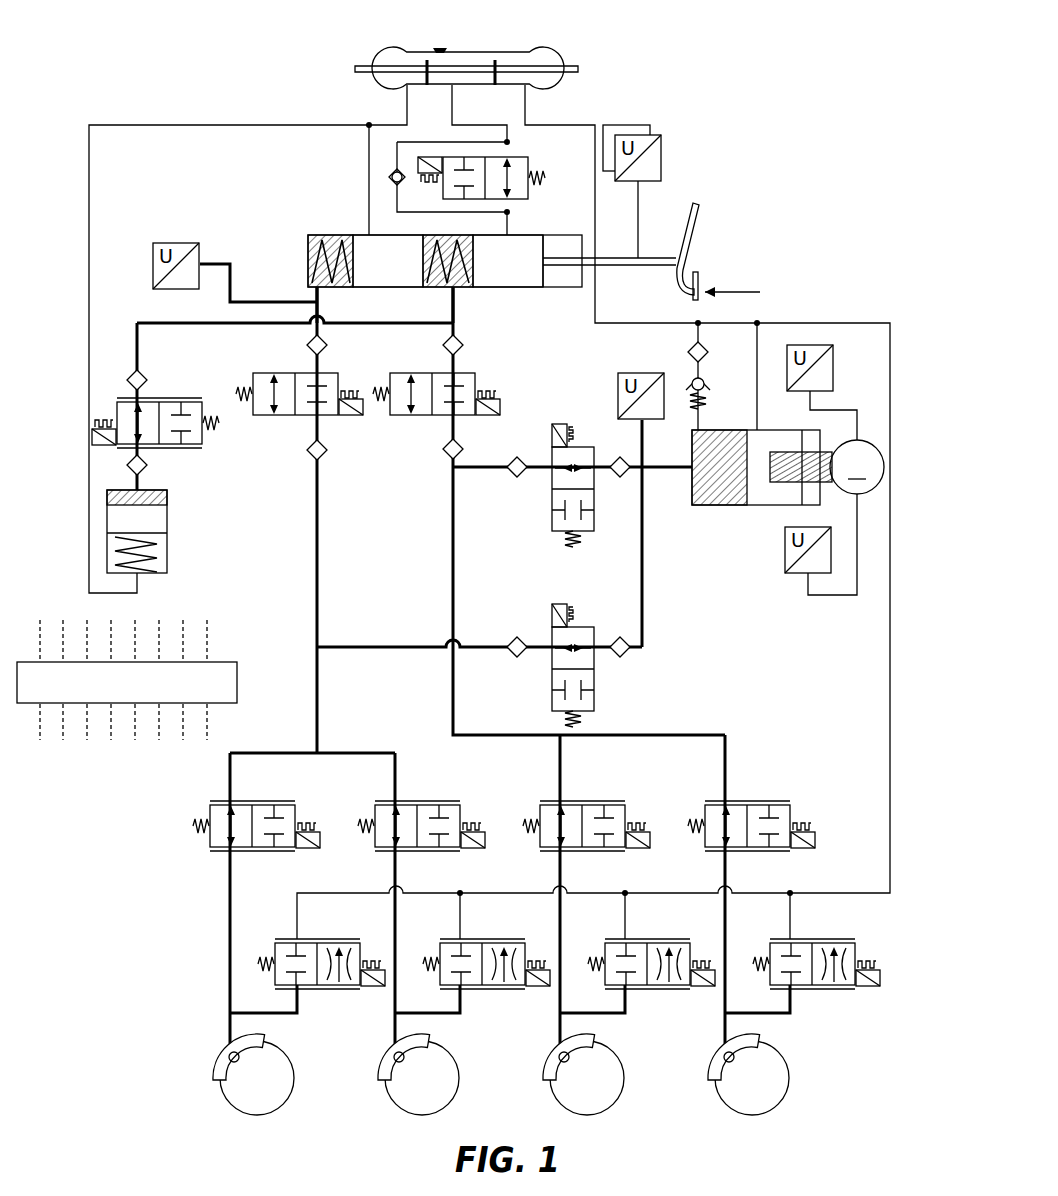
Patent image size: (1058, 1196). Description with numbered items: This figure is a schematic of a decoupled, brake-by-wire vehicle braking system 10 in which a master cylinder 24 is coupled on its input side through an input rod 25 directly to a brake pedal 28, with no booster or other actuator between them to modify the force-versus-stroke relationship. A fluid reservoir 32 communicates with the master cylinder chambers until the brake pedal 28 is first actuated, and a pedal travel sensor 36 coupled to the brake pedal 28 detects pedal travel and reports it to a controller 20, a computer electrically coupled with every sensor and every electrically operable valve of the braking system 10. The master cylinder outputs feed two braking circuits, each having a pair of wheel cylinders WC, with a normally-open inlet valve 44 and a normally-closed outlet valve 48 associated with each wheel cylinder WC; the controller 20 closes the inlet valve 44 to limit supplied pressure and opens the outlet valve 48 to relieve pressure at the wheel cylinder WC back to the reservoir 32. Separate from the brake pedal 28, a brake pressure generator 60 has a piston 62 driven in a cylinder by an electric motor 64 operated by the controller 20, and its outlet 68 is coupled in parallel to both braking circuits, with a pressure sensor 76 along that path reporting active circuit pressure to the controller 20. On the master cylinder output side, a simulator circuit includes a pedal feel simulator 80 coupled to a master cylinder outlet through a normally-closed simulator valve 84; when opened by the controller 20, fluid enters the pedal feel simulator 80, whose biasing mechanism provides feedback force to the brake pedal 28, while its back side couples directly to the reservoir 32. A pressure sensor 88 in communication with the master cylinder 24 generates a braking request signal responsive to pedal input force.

The braking system 10 is at (804, 147).
The controller 20 is at (232, 656).
The master cylinder 24 is at (309, 223).
The input rod 25 is at (653, 257).
The brake pedal 28 is at (704, 285).
The fluid reservoir 32 is at (573, 42).
The pedal travel sensor 36 is at (663, 148).
The inlet valve 44 is at (262, 804).
The outlet valve 48 is at (308, 943).
The brake pressure generator 60 is at (874, 397).
The piston 62 is at (763, 493).
The electric motor 64 is at (878, 467).
The outlet 68 is at (692, 470).
The pressure sensor 76 is at (643, 373).
The pedal feel simulator 80 is at (168, 520).
The simulator valve 84 is at (170, 402).
The pressure sensor 88 is at (198, 243).
The wheel cylinder WC is at (226, 1054).